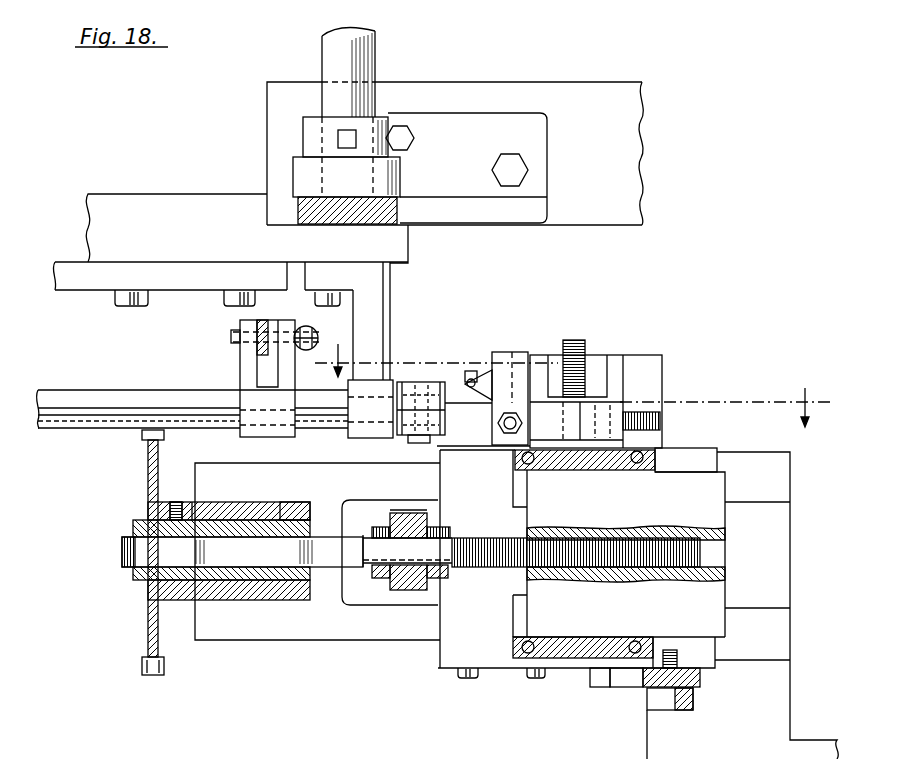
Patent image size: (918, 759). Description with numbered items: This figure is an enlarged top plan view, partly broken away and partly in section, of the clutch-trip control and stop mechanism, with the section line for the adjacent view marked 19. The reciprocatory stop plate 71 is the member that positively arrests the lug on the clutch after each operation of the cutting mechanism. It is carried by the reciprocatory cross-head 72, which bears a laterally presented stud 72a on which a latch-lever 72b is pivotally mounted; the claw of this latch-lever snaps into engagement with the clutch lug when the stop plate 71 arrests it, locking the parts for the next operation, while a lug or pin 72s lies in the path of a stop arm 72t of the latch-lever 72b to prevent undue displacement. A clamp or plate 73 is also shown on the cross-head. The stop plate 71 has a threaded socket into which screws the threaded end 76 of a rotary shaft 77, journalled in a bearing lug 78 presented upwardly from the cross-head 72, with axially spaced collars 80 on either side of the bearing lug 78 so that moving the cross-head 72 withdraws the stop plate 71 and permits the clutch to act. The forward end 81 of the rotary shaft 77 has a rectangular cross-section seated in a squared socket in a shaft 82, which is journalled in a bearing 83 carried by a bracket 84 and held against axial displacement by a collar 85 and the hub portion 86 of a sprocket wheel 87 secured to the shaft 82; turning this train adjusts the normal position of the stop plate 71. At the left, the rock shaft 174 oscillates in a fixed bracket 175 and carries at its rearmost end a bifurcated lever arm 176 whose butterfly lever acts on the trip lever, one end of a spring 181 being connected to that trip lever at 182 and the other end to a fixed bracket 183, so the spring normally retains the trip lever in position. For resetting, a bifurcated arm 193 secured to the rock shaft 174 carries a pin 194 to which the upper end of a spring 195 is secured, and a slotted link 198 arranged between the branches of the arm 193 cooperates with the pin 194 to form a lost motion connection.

The section line 19- 19 is at (572, 374).
The stop plate 71 is at (626, 553).
The cross-head 72 is at (558, 564).
The stud 72a is at (670, 712).
The latch-lever 72b is at (700, 680).
The lug or pin 72s is at (600, 688).
The stop arm 72t is at (625, 688).
The clamp plate 73 is at (513, 458).
The threaded end 76 is at (497, 540).
The rotary shaft 77 is at (380, 548).
The bearing lug 78 is at (410, 591).
The collars 80 is at (376, 580).
The forward end 81 is at (130, 550).
The shaft 82 is at (140, 584).
The bearing 83 is at (205, 600).
The bracket 84 is at (262, 641).
The collar 85 is at (308, 515).
The hub portion 86 is at (166, 500).
The sprocket wheel 87 is at (148, 470).
The rock shaft 174 is at (100, 398).
The fixed bracket 175 is at (391, 310).
The bifurcated lever arm 176 is at (410, 381).
The spring 181 is at (466, 372).
The spring connection point 182 is at (480, 370).
The fixed bracket 183 is at (496, 366).
The bifurcated arm 193 is at (240, 382).
The pin 194 is at (231, 336).
The spring 195 is at (312, 352).
The slotted link 198 is at (262, 322).